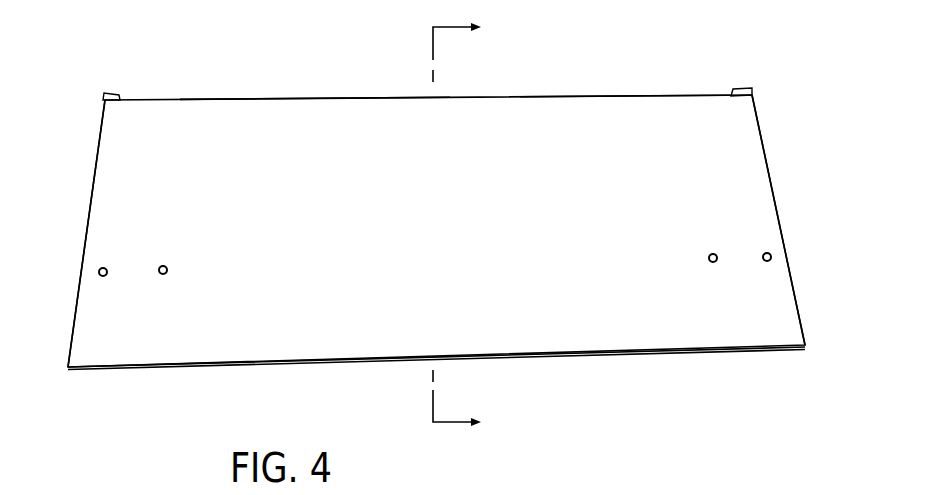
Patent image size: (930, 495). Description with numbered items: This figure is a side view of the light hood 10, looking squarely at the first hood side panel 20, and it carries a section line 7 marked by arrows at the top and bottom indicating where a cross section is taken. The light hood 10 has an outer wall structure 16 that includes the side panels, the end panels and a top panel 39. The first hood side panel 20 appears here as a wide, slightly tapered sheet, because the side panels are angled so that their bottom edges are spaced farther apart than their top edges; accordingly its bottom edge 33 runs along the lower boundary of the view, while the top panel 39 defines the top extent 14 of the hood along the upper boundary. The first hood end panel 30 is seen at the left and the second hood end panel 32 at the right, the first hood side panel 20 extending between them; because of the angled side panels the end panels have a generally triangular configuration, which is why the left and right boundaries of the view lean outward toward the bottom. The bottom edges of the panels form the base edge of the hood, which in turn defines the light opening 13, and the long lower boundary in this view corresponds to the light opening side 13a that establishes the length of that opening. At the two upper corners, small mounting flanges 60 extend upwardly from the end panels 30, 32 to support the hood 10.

The light hood 10 is at (247, 70).
The light opening 13 is at (613, 353).
The light opening side 13a is at (157, 367).
The top extent 14 is at (357, 98).
The outer wall structure 16 is at (665, 95).
The first hood side panel 20 is at (283, 333).
The first hood end panel 30 is at (91, 180).
The second hood end panel 32 is at (768, 162).
The bottom edge of first side panel 33 is at (373, 357).
The top panel 39 is at (582, 95).
The mounting flange 60 is at (113, 96).
The section line 7- 7 is at (468, 227).